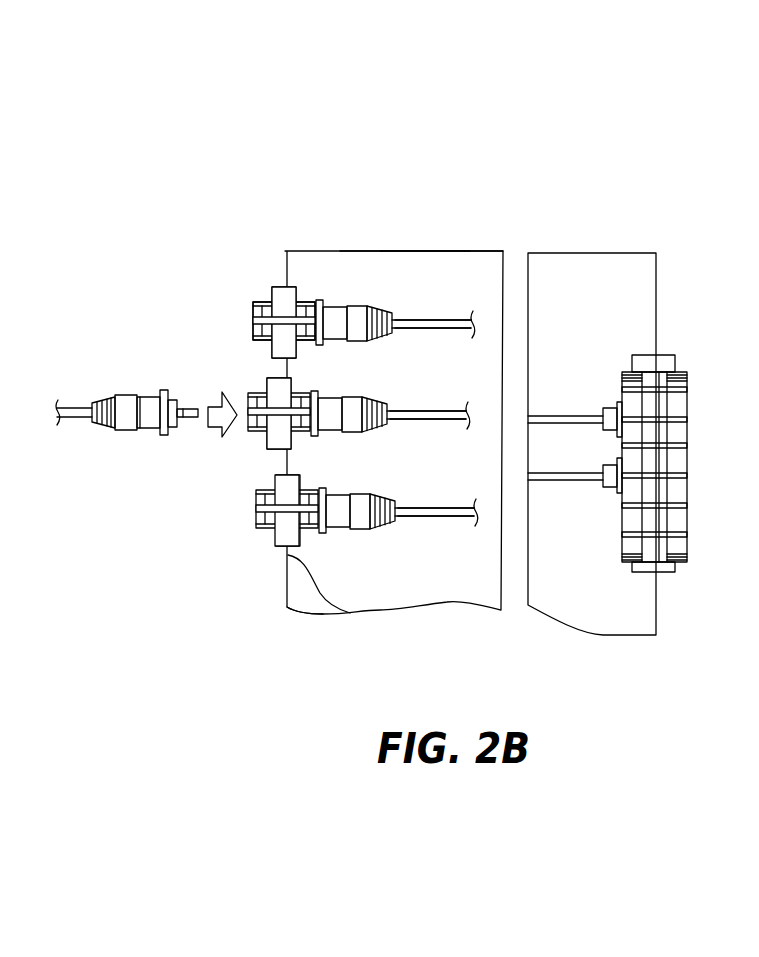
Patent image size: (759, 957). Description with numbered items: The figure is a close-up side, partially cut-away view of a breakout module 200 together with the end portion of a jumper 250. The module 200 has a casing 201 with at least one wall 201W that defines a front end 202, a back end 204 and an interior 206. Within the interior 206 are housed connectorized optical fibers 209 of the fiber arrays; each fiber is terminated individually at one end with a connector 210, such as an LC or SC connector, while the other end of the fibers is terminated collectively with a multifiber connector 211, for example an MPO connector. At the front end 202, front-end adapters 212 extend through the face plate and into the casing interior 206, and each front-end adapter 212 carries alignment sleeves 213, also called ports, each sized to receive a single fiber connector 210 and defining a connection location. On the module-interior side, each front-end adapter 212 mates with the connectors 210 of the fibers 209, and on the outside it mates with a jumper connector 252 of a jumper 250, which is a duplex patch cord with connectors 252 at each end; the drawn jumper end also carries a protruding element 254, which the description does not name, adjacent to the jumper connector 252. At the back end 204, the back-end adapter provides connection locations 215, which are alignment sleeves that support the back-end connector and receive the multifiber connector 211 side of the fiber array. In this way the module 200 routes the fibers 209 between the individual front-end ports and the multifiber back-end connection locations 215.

The breakout module 200 is at (218, 146).
The casing 201 is at (326, 244).
The wall 201W is at (443, 250).
The interior 206 is at (412, 273).
The front end 202 is at (287, 573).
The back end 204 is at (657, 263).
The connectorized optical fibers 209 is at (453, 330).
The connectors 210 is at (332, 341).
The multifiber connector 211 is at (607, 408).
The front-end adapters 212 is at (275, 287).
The alignment sleeves 213 is at (258, 305).
The connection locations 215 is at (668, 400).
The jumper 250 is at (118, 361).
The jumper connector 252 is at (147, 400).
The contact pin 254 is at (192, 419).